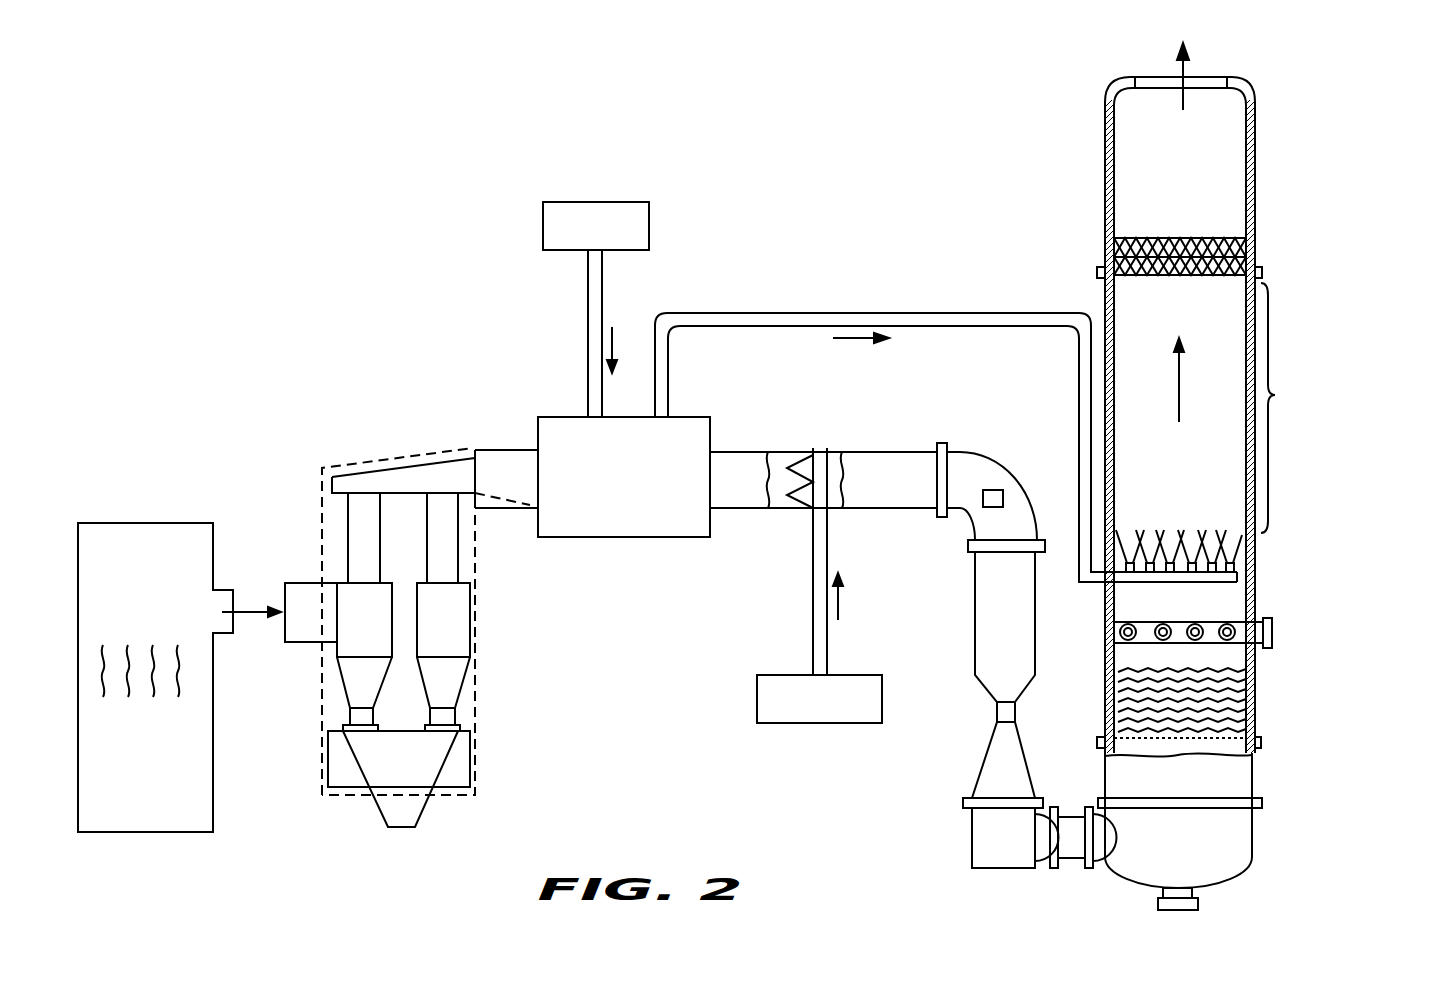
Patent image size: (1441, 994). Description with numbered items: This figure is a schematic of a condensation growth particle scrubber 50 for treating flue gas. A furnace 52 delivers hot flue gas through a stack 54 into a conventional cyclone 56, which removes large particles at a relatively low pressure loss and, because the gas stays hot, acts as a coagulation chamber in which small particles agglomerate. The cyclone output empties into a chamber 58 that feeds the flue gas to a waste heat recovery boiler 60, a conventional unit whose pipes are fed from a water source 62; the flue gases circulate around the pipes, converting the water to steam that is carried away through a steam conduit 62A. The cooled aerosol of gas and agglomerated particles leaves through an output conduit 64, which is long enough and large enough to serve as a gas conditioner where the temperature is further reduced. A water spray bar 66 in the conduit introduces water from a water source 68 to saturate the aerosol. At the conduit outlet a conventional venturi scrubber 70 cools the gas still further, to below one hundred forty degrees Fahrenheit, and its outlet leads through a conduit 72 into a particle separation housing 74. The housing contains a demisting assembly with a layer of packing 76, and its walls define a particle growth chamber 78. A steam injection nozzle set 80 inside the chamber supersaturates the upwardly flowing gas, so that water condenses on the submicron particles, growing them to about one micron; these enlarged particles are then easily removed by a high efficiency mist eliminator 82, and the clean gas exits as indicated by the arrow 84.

The condensation growth particle scrubber 50 is at (405, 406).
The furnace 52 is at (200, 735).
The stack 54 is at (242, 612).
The cyclone 56 is at (478, 726).
The chamber 58 is at (500, 450).
The waste heat recovery boiler 60 is at (625, 537).
The water source 62 is at (542, 228).
The steam conduit 62A is at (816, 313).
The output conduit 64 is at (738, 452).
The water spray bar 66 is at (822, 465).
The water source 68 is at (757, 692).
The venturi scrubber 70 is at (995, 713).
The conduit 72 is at (1068, 865).
The particle separation housing 74 is at (1253, 773).
The layer of packing 76 is at (1233, 685).
The particle growth chamber 78 is at (1212, 483).
The steam injection nozzle set 80 is at (1243, 577).
The mist eliminator 82 is at (1255, 253).
The clean gas exit arrow 84 is at (1200, 78).